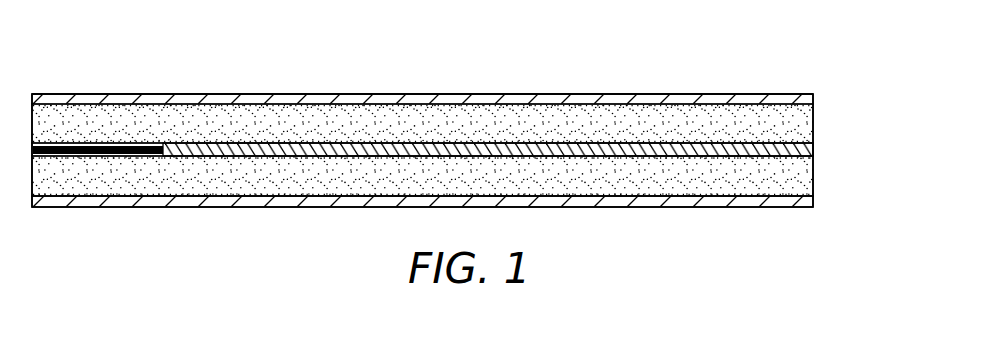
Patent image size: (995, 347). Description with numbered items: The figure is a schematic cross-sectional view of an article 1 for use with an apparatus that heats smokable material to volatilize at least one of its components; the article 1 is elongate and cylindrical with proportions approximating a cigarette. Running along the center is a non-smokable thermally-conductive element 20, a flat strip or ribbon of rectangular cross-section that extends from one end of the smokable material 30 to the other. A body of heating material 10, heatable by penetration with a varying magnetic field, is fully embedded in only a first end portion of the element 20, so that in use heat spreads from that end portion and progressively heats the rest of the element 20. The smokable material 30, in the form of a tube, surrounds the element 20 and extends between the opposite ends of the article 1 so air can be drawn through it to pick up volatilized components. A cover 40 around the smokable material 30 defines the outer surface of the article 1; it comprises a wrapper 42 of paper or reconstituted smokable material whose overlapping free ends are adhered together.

The article 1 is at (454, 133).
The body of heating material 10 is at (120, 154).
The non-smokable thermally-conductive element 20 is at (675, 156).
The smokable material 30 is at (805, 122).
The cover 40 is at (331, 94).
The wrapper 42 is at (508, 94).